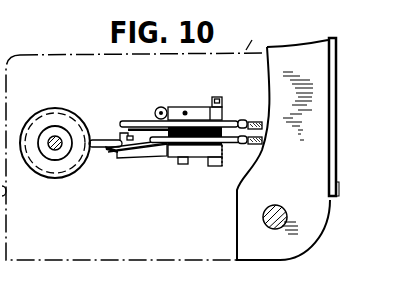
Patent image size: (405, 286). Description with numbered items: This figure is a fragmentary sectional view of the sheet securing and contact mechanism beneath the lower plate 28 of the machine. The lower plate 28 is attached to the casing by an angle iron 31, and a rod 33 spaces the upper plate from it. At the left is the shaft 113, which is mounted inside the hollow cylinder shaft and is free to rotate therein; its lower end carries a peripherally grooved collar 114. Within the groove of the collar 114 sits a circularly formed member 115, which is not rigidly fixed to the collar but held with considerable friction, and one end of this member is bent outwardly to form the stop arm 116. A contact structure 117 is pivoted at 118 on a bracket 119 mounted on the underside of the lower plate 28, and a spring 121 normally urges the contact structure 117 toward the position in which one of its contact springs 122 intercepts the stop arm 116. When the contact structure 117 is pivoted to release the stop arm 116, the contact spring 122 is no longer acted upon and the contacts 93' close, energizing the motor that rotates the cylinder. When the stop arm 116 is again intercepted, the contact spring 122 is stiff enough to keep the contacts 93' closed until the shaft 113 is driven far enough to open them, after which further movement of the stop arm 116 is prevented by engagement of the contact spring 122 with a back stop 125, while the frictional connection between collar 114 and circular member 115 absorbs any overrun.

The lower plate 28 is at (285, 68).
The angle iron 31 is at (330, 39).
The rod 33 is at (283, 213).
The contacts 93' is at (179, 113).
The shaft 113 is at (56, 137).
The peripherally grooved collar 114 is at (82, 166).
The circularly formed member 115 is at (44, 172).
The stop arm 116 is at (101, 139).
The contact structure 117 is at (203, 108).
The pivot 118 is at (221, 96).
The bracket 119 is at (223, 105).
The spring 121 is at (162, 106).
The contact spring 122 is at (109, 153).
The back stop 125 is at (158, 156).